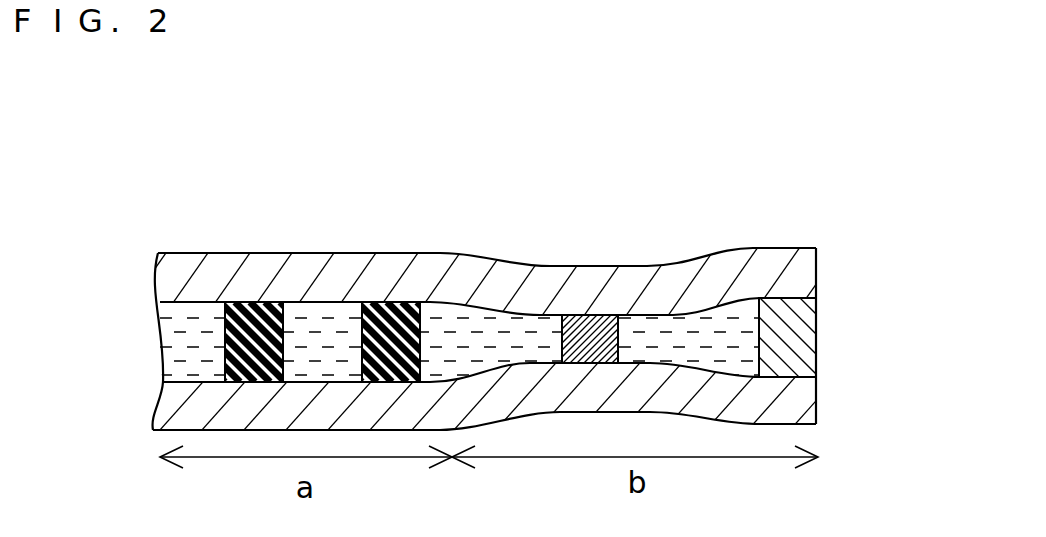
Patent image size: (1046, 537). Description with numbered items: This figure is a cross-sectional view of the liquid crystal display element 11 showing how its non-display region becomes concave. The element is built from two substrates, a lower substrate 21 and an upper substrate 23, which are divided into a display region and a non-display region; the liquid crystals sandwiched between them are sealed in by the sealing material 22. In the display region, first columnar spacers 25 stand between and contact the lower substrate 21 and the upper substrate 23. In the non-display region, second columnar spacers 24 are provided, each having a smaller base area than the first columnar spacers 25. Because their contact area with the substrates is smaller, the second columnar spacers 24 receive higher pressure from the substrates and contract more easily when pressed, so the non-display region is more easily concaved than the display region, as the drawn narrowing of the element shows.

The liquid crystal display element 11 is at (788, 187).
The lower substrate 21 is at (803, 400).
The sealing material 22 is at (805, 342).
The upper substrate 23 is at (803, 278).
The second columnar spacers 24 is at (593, 315).
The first columnar spacers 25 is at (383, 302).